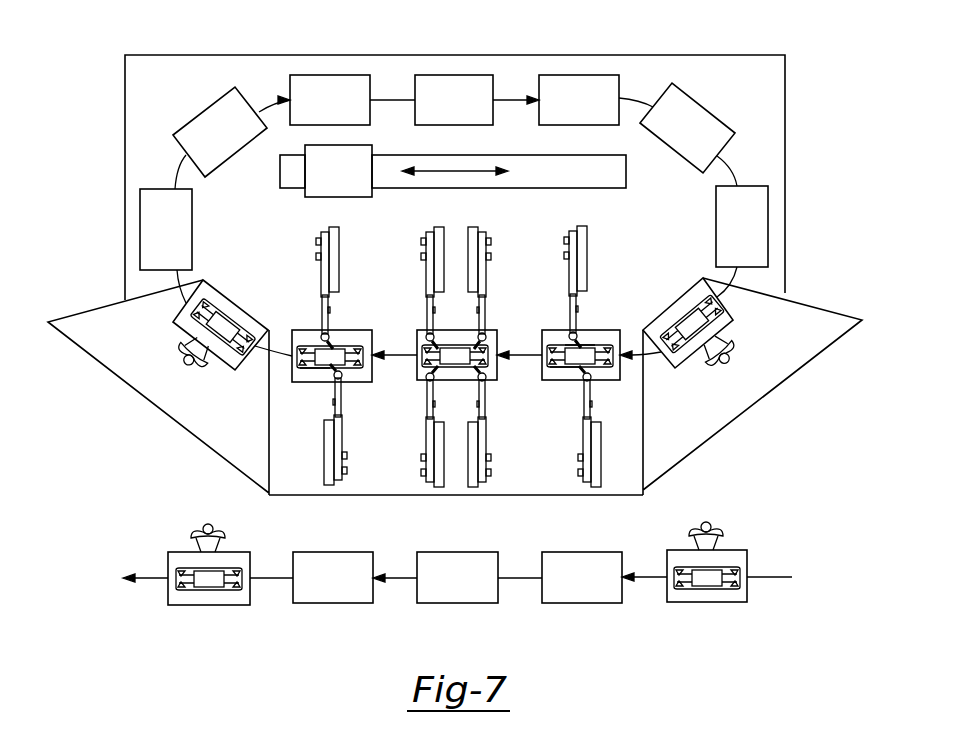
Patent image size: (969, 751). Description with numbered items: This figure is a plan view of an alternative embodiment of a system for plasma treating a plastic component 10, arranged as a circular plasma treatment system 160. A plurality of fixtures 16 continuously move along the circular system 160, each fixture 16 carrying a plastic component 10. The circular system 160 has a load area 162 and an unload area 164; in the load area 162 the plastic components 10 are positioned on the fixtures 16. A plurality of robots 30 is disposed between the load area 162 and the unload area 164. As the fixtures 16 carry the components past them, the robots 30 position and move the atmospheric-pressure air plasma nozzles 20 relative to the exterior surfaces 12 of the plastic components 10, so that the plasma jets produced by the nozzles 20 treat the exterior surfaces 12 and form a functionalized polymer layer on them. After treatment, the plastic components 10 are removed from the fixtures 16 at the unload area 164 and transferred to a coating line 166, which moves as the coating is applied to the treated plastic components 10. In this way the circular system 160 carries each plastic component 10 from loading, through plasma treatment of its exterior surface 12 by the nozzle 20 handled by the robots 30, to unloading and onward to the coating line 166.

The plastic component 10 is at (184, 330).
The exterior surface 12 is at (353, 362).
The fixture 16 is at (177, 237).
The atmospheric-pressure air plasma nozzle 20 is at (317, 367).
The robot 30 is at (425, 260).
The circular plasma treatment system 160 is at (838, 137).
The load area 162 is at (777, 367).
The unload area 164 is at (165, 390).
The coating line 166 is at (270, 598).